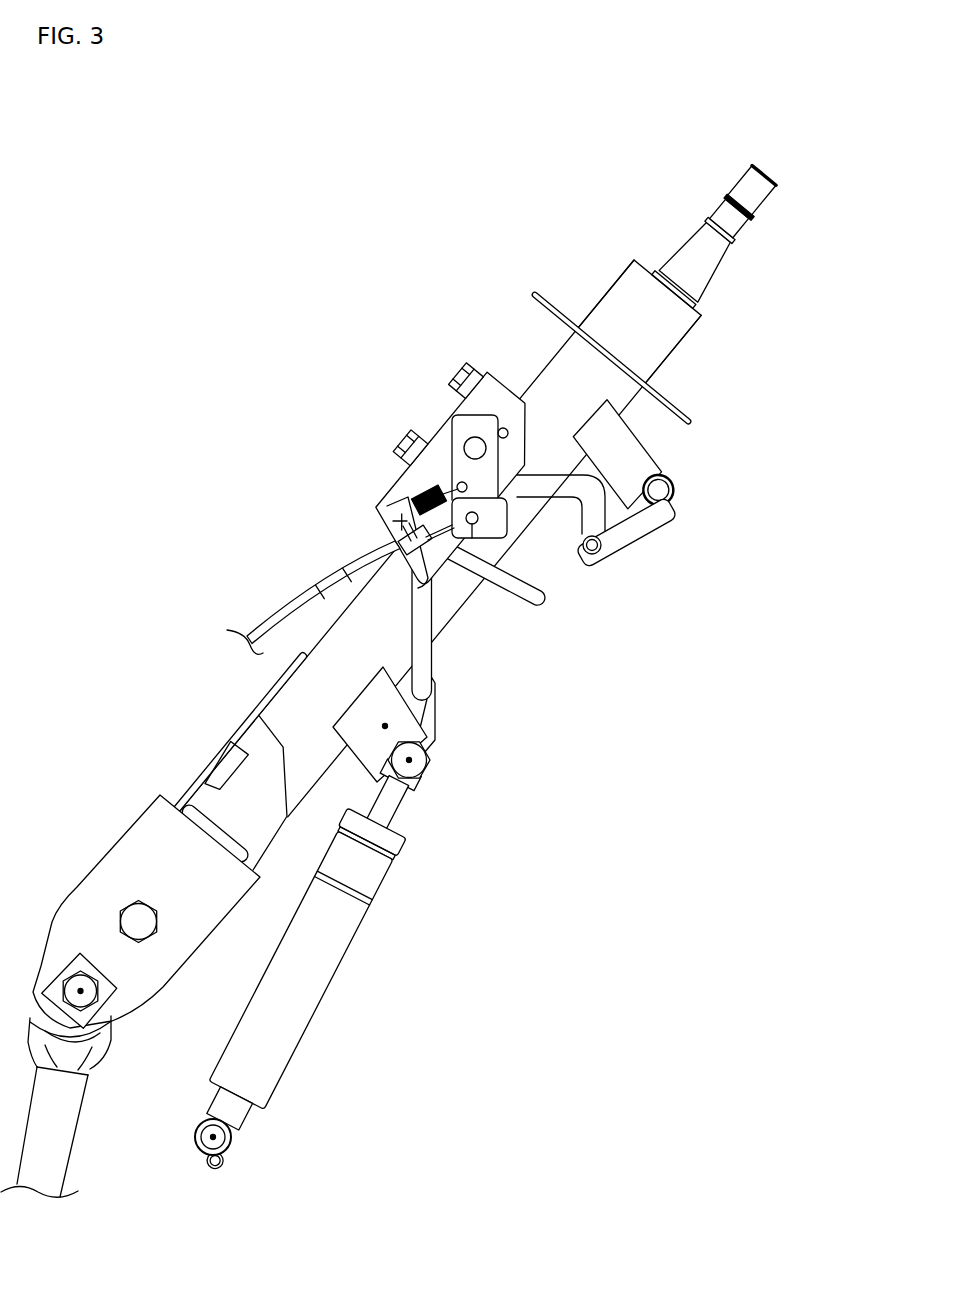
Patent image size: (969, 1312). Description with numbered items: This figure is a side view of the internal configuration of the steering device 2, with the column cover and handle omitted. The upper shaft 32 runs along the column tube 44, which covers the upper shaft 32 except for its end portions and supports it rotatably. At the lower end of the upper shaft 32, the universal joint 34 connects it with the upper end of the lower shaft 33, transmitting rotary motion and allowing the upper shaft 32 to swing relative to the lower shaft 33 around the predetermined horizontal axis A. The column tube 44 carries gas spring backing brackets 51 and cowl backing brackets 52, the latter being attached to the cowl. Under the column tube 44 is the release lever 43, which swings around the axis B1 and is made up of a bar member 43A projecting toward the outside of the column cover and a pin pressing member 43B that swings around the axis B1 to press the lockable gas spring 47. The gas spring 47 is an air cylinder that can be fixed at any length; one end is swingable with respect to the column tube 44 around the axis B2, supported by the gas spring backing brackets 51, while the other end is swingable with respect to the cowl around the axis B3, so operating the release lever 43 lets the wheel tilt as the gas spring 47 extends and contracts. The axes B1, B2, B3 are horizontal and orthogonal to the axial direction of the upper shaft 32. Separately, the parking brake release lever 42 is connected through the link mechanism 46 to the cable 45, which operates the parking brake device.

The steering device 2 is at (148, 240).
The upper shaft 32 is at (702, 271).
The lower shaft 33 is at (62, 1147).
The universal joint 34 is at (113, 1035).
The parking brake release lever 42 is at (648, 548).
The release lever 43 is at (510, 614).
The bar member 43A is at (518, 592).
The pin pressing member 43B is at (428, 709).
The column tube 44 is at (598, 303).
The cable 45 is at (297, 590).
The link mechanism 46 is at (437, 418).
The lockable gas spring 47 is at (333, 985).
The gas spring backing brackets 51 is at (362, 694).
The cowl backing brackets 52 is at (118, 848).
The horizontal axis A is at (78, 991).
The axis B1 is at (385, 727).
The axis B2 is at (412, 760).
The axis B3 is at (215, 1135).